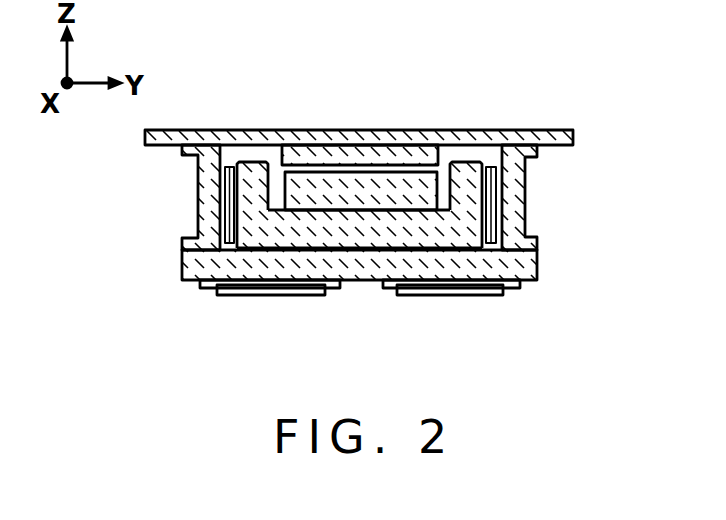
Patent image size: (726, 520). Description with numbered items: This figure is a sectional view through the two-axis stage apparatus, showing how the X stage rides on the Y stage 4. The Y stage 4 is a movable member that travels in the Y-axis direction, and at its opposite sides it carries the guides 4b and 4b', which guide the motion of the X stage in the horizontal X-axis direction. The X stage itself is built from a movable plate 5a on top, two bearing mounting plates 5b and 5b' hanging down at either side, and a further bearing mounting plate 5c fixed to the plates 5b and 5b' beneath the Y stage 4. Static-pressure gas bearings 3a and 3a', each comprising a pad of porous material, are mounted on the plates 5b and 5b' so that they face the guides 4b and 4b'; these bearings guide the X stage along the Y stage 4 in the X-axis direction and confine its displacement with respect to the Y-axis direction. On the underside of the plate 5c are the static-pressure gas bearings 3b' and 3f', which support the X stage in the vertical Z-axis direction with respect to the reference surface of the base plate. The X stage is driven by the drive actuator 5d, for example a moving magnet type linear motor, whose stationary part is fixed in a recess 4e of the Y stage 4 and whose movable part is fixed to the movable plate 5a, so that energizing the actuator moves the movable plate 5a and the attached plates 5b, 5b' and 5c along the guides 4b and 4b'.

The static-pressure gas bearing 3a is at (172, 205).
The static-pressure gas bearing 3a' is at (549, 205).
The static-pressure gas bearing 3b' is at (270, 317).
The static-pressure gas bearing 3f' is at (451, 317).
The Y stage 4 is at (340, 215).
The guide 4b is at (482, 159).
The guide 4b' is at (236, 159).
The recess 4e is at (275, 205).
The movable plate 5a is at (575, 131).
The bearing mounting plate 5b is at (165, 197).
The bearing mounting plate 5b' is at (557, 197).
The bearing mounting plate 5c is at (532, 258).
The drive actuator 5d is at (405, 164).